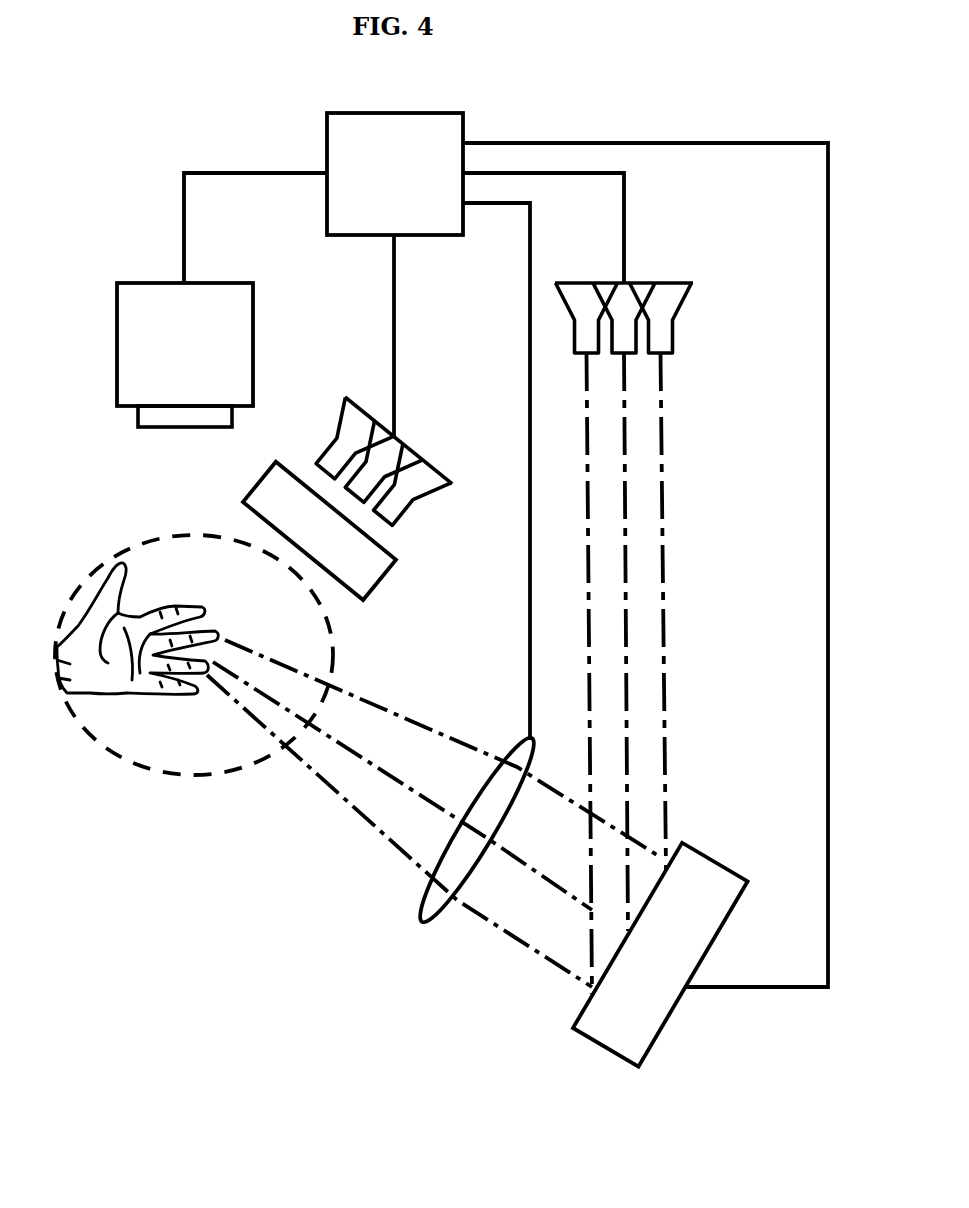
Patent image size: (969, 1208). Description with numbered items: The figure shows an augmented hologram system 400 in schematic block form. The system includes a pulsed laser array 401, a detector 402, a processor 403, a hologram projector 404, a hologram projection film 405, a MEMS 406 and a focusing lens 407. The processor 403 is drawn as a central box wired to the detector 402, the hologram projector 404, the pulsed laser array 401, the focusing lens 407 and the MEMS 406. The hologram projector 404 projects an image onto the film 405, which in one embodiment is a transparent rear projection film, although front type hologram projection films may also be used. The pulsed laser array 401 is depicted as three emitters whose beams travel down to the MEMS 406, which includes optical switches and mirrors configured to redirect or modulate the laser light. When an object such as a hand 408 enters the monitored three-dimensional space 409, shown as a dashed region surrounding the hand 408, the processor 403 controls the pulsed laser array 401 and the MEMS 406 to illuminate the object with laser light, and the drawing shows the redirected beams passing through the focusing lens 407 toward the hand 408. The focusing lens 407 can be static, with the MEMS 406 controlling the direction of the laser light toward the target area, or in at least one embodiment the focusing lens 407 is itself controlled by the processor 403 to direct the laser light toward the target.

The augmented hologram system 400 is at (157, 127).
The pulsed laser array 401 is at (652, 283).
The detector 402 is at (117, 303).
The processor 403 is at (327, 129).
The hologram projector 404 is at (340, 427).
The hologram projection film 405 is at (393, 540).
The MEMS 406 is at (660, 1033).
The focusing lens 407 is at (426, 923).
The hand 408 is at (128, 693).
The monitored three-dimensional space 409 is at (177, 535).